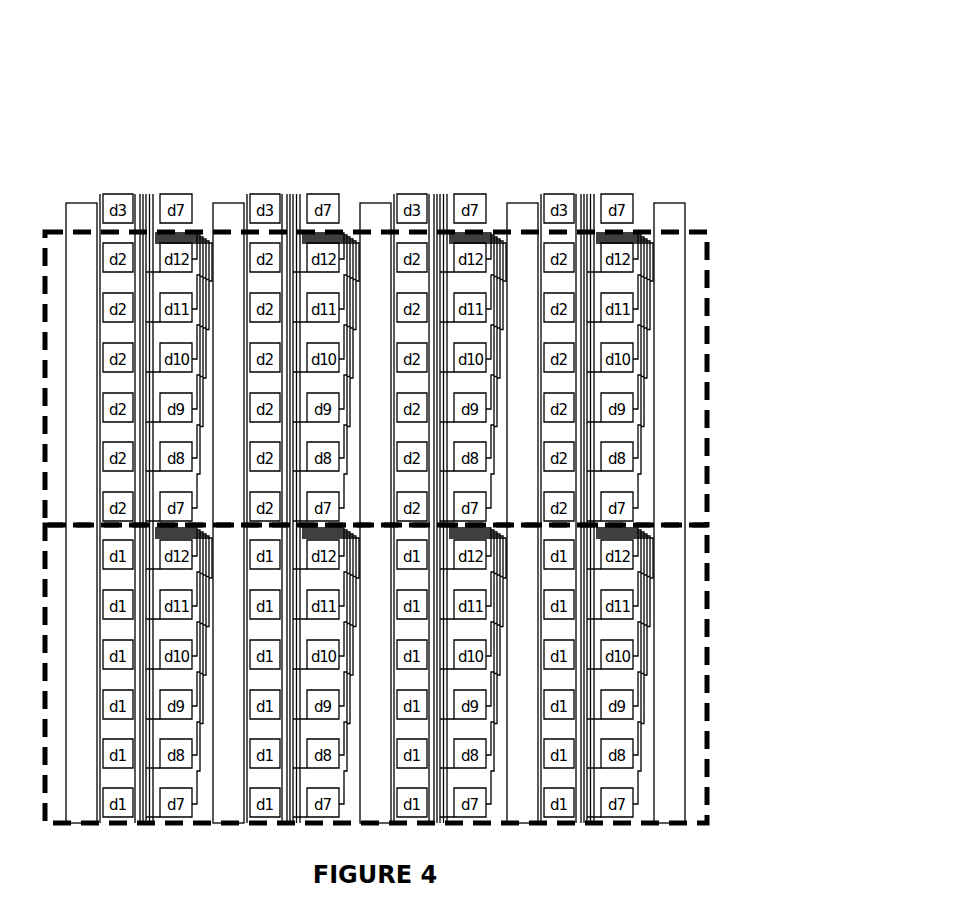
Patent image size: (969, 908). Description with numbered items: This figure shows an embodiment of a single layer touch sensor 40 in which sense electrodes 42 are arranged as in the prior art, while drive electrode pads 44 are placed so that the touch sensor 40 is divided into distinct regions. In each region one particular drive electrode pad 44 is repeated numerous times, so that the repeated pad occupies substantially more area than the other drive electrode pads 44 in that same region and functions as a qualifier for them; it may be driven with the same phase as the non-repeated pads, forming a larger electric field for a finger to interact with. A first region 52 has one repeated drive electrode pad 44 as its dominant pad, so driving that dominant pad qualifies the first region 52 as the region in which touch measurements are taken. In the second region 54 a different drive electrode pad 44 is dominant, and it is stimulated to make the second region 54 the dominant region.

The touch sensor 40 is at (358, 138).
The sense electrodes 42 is at (228, 200).
The drive electrode pads 44 is at (560, 195).
The first region 52 is at (708, 645).
The second region 54 is at (708, 388).